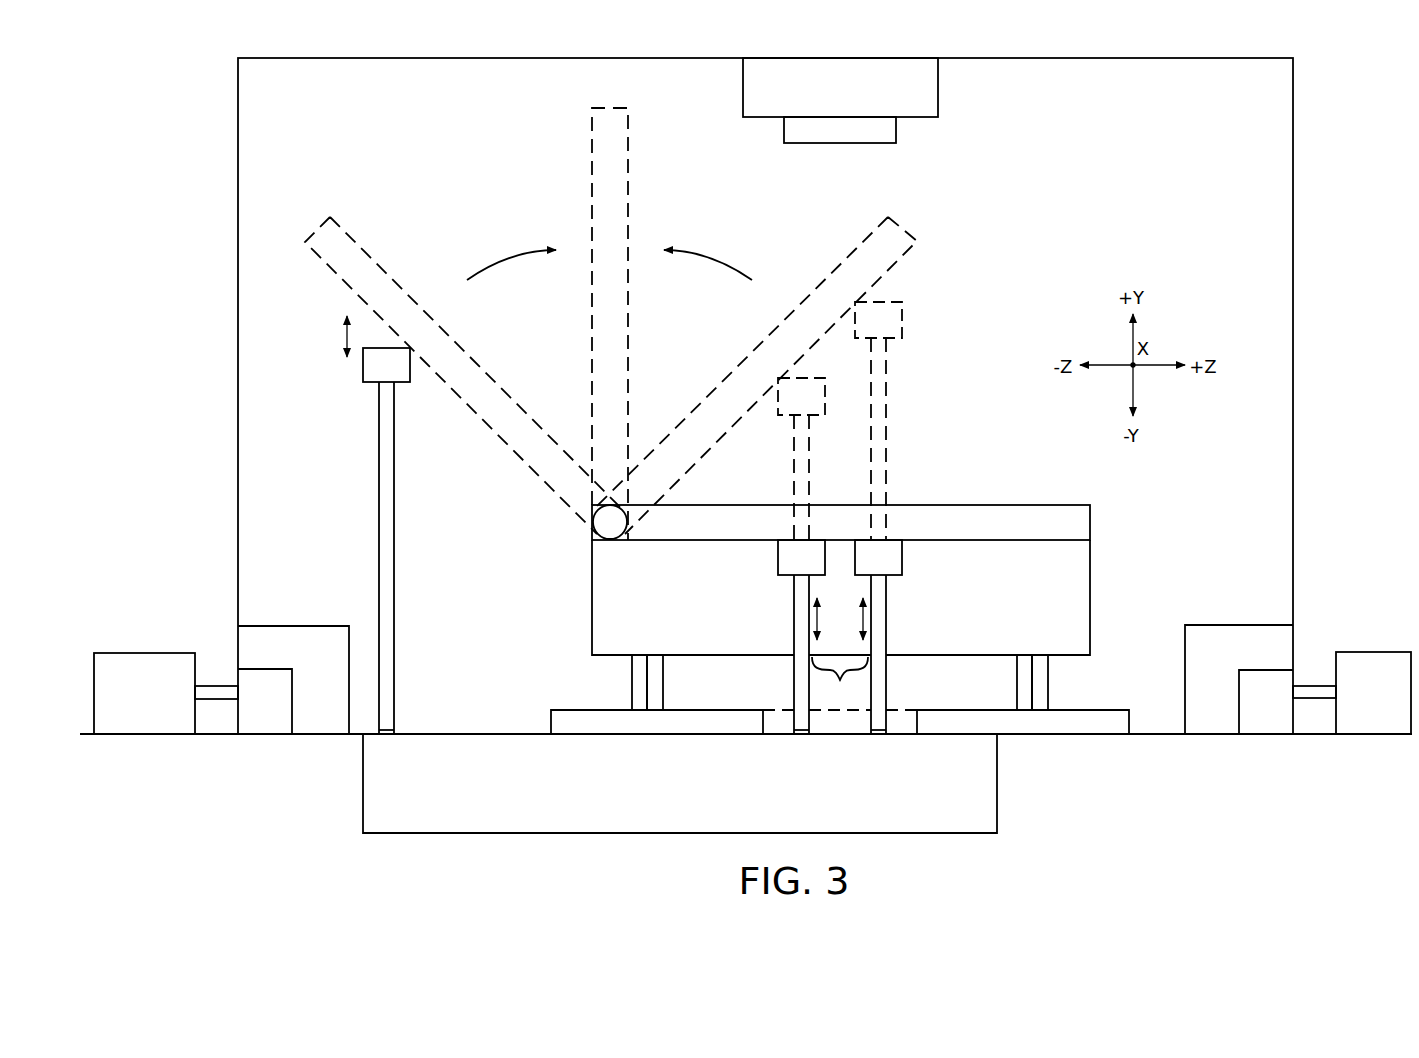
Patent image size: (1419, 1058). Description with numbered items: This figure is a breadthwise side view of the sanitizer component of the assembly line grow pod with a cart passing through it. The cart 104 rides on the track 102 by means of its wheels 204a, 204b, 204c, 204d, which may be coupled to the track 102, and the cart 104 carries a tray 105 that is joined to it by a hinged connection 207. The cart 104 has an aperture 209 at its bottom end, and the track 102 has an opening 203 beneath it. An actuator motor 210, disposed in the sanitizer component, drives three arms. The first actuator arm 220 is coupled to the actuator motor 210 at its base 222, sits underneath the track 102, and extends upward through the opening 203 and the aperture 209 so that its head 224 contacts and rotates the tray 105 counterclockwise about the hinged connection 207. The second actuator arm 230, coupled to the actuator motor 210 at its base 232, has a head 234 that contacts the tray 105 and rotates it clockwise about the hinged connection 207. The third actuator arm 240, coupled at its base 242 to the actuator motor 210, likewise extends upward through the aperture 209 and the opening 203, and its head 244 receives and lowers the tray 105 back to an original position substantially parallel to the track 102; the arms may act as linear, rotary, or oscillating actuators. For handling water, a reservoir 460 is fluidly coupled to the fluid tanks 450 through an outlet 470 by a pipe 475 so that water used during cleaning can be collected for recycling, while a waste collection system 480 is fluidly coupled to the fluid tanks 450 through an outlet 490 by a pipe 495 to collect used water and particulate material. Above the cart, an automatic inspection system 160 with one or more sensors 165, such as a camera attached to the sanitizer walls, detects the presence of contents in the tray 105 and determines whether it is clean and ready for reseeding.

The track 102 is at (598, 718).
The cart 104 is at (841, 597).
The tray 105 is at (841, 522).
The automatic inspection system 160 is at (840, 87).
The sensor 165 is at (896, 130).
The opening 203 is at (855, 722).
The wheel 204a is at (632, 692).
The wheel 204b is at (1017, 692).
The wheel 204c is at (663, 692).
The wheel 204d is at (1048, 692).
The hinged connection 207 is at (593, 522).
The aperture 209 is at (840, 683).
The actuator motor 210 is at (680, 783).
The first actuator arm 220 is at (886, 596).
The base 222 is at (879, 735).
The head 224 is at (902, 560).
The second actuator arm 230 is at (379, 487).
The base 232 is at (386, 735).
The head 234 is at (363, 368).
The third actuator arm 240 is at (794, 596).
The base 242 is at (801, 735).
The head 244 is at (778, 560).
The fluid tank 450 is at (752, 693).
The reservoir 460 is at (1239, 679).
The outlet 470 is at (1266, 702).
The pipe 475 is at (1310, 686).
The waste collection system 480 is at (293, 680).
The outlet 490 is at (265, 701).
The pipe 495 is at (222, 686).